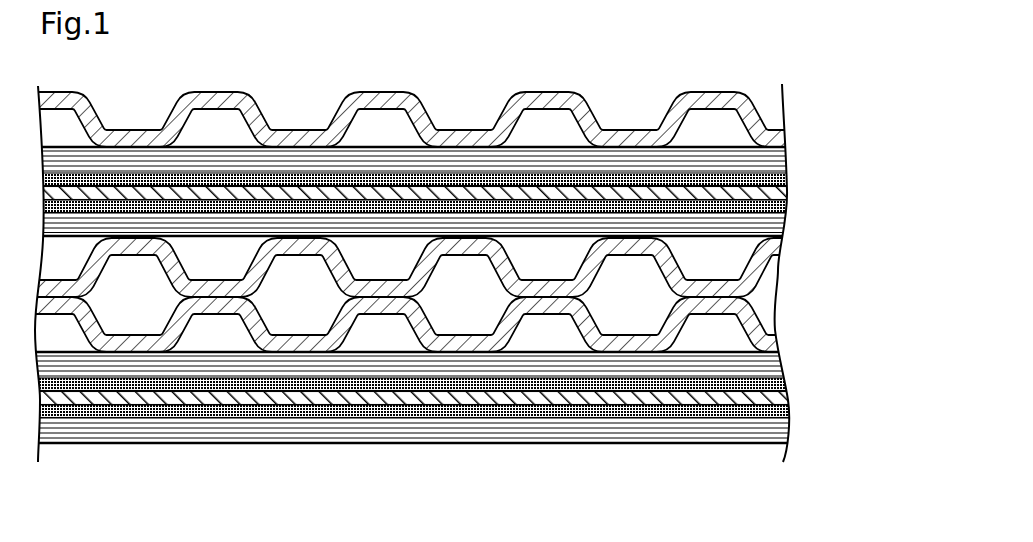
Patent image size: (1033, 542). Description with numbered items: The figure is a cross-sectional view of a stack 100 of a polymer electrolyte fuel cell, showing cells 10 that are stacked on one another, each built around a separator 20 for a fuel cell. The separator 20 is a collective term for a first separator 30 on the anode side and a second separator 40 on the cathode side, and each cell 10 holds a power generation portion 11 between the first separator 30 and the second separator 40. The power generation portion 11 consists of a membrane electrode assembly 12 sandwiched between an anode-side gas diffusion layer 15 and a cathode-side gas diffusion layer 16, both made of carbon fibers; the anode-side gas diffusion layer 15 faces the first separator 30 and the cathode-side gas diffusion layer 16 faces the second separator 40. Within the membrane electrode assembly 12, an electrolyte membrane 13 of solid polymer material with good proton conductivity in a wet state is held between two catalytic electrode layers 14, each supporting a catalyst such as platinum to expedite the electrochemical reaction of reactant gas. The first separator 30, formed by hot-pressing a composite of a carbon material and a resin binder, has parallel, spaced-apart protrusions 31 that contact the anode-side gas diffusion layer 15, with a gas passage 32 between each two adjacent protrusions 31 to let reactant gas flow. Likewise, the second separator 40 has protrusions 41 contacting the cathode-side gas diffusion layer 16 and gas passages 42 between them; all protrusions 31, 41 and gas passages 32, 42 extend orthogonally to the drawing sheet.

The stack 100 is at (748, 67).
The cell 10 is at (490, 284).
The power generation portion 11 is at (575, 145).
The membrane electrode assembly 12 is at (463, 302).
The electrolyte membrane 13 is at (784, 193).
The catalytic electrode layer 14 is at (784, 184).
The anode-side gas diffusion layer 15 is at (778, 162).
The cathode-side gas diffusion layer 16 is at (465, 348).
The separator 20 is at (449, 215).
The first separator 30 is at (423, 215).
The protrusion 31 is at (160, 142).
The gas passage 32 is at (220, 120).
The second separator 40 is at (423, 270).
The protrusion 41 is at (160, 262).
The gas passage 42 is at (218, 271).